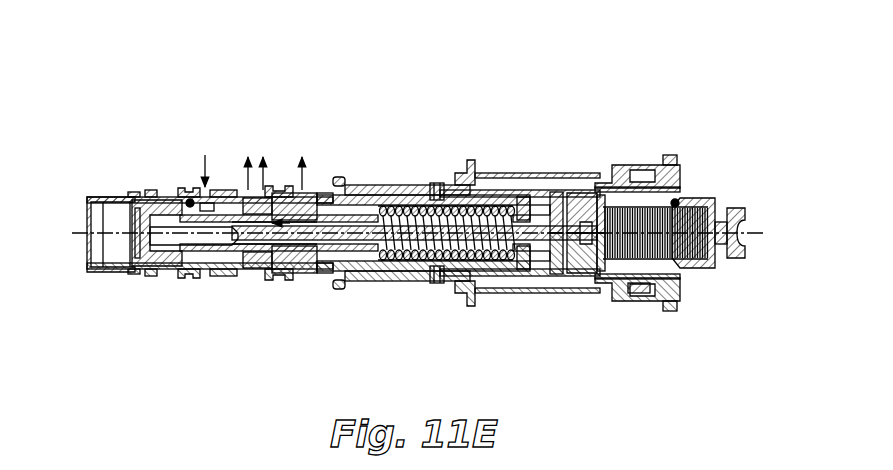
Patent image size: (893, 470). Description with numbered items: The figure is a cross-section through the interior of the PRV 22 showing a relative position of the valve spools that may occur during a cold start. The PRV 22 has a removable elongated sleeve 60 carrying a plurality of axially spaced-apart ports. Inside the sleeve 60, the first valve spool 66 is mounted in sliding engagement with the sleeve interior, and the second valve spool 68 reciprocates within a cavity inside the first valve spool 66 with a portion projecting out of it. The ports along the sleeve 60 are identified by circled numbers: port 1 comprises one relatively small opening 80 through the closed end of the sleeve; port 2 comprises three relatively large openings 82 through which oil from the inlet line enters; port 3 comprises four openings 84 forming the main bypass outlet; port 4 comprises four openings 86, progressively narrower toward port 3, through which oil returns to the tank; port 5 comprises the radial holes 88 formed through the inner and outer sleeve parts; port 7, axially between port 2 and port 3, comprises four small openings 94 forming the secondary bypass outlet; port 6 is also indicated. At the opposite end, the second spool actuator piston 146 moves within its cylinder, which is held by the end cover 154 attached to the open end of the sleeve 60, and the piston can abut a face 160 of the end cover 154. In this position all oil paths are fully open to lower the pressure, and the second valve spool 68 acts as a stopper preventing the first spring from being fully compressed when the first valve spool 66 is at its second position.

The PRV 22 is at (386, 167).
The sleeve 60 is at (172, 241).
The first valve spool 66 is at (185, 272).
The second valve spool 68 is at (355, 288).
The opening 80 is at (98, 206).
The openings 82 is at (205, 136).
The openings 84 is at (340, 157).
The openings 86 is at (336, 198).
The radial holes 88 is at (470, 188).
The openings 94 is at (263, 183).
The second spool actuator piston 146 is at (636, 191).
The end cover 154 is at (745, 278).
The face 160 is at (605, 320).
The port 1 is at (98, 188).
The port 2 is at (205, 118).
The port 3 is at (344, 136).
The port 4 is at (337, 181).
The port 5 is at (471, 169).
The stage 6 is at (733, 170).
The port 7 is at (264, 164).